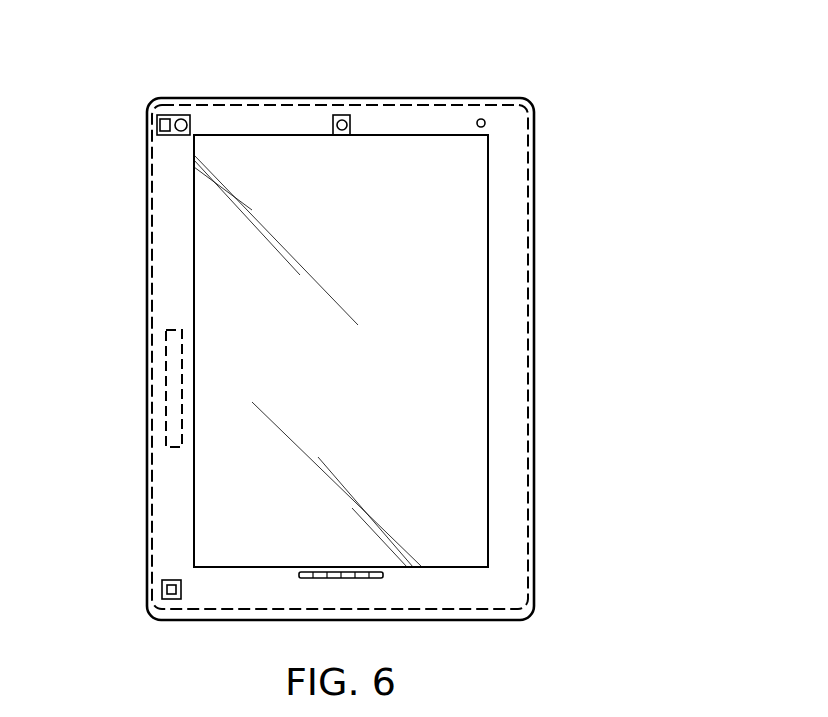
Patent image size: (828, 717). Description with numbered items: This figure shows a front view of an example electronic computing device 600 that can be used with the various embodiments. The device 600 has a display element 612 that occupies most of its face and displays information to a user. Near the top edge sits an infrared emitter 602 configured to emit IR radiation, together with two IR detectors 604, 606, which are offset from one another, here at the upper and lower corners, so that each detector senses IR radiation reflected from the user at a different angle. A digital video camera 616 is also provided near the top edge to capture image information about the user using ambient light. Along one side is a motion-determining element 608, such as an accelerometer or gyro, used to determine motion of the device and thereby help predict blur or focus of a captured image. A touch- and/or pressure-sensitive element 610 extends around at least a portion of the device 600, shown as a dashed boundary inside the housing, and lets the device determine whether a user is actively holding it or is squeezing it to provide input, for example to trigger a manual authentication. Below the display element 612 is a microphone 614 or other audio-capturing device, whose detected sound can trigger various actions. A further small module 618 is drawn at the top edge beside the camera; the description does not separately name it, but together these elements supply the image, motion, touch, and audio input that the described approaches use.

The electronic computing device 600 is at (700, 112).
The infrared emitter 602 is at (186, 119).
The infrared detector 604 is at (168, 120).
The infrared detector 606 is at (170, 591).
The motion-determining element 608 is at (178, 398).
The touch- and/or pressure-sensitive element 610 is at (151, 314).
The display element 612 is at (490, 343).
The microphone 614 is at (383, 575).
The digital video camera 616 is at (485, 124).
The camera module 618 is at (350, 125).